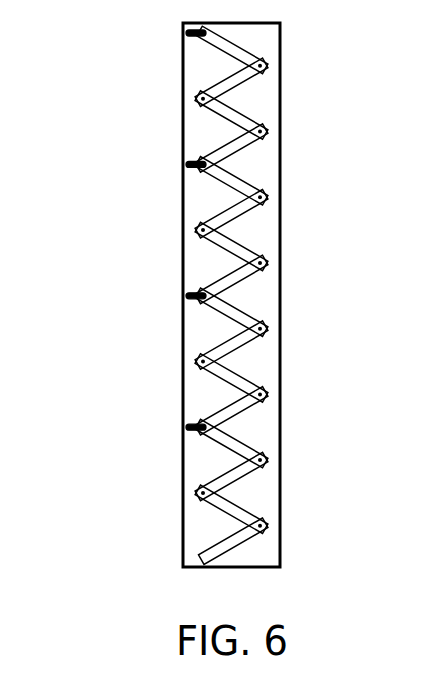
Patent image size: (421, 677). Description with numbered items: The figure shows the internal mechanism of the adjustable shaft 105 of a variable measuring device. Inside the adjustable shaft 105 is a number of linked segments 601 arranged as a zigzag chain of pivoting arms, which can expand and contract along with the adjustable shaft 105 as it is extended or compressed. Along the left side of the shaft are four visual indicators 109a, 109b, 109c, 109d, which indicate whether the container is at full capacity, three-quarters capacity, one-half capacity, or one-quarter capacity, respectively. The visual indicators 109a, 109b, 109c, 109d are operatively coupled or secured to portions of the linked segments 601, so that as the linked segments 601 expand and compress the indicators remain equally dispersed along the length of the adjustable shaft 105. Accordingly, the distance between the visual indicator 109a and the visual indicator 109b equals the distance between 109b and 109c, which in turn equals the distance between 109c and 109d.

The adjustable shaft 105 is at (282, 514).
The linked segments 601 is at (218, 538).
The visual indicator 109a is at (183, 33).
The visual indicator 109b is at (183, 164).
The visual indicator 109c is at (183, 296).
The visual indicator 109d is at (183, 427).